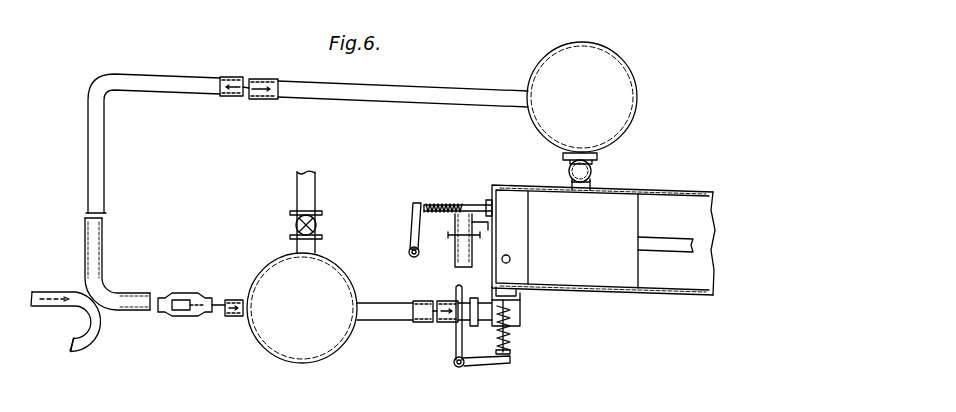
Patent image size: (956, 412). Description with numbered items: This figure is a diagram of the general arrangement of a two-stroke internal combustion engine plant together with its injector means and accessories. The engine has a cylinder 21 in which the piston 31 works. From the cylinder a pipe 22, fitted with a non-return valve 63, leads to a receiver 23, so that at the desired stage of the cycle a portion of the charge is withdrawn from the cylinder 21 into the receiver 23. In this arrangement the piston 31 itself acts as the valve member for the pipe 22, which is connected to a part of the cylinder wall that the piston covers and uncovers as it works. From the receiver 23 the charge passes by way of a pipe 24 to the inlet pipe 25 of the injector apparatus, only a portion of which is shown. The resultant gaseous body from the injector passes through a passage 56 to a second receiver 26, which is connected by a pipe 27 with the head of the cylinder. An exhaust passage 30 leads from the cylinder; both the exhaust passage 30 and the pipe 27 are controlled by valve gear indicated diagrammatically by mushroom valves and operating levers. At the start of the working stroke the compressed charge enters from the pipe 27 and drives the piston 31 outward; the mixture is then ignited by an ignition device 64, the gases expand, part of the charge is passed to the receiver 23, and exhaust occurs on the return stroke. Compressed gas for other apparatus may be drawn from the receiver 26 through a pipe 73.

The cylinder 21 is at (510, 166).
The pipe 22 is at (582, 192).
The receiver 23 is at (616, 131).
The pipe 24 is at (180, 77).
The inlet pipe 25 is at (84, 263).
The receiver 26 is at (322, 358).
The pipe 27 is at (381, 323).
The exhaust passage 30 is at (456, 181).
The piston 31 is at (577, 280).
The passage 56 is at (210, 297).
The non-return valve 63 is at (594, 170).
The ignition device 64 is at (501, 261).
The pipe 73 is at (316, 197).